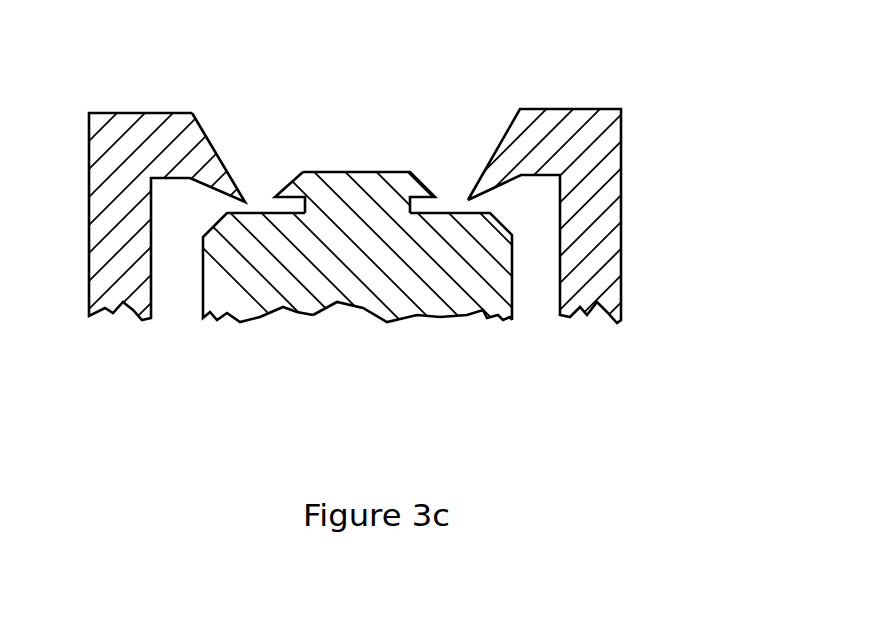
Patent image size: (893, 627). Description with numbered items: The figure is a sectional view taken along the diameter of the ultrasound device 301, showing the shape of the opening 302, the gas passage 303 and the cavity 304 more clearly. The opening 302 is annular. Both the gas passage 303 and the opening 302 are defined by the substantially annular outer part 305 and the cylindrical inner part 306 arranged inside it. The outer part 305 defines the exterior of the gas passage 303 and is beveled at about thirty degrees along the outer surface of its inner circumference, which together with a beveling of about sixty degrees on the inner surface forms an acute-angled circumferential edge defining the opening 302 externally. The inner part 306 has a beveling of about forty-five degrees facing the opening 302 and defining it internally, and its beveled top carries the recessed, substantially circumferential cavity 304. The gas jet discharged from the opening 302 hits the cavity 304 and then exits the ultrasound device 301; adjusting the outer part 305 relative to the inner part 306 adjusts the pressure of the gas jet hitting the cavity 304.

The ultrasound device 301 is at (492, 329).
The opening 302 is at (223, 202).
The gas passage 303 is at (177, 303).
The cavity 304 is at (290, 203).
The outer part 305 is at (607, 220).
The inner part 306 is at (335, 172).